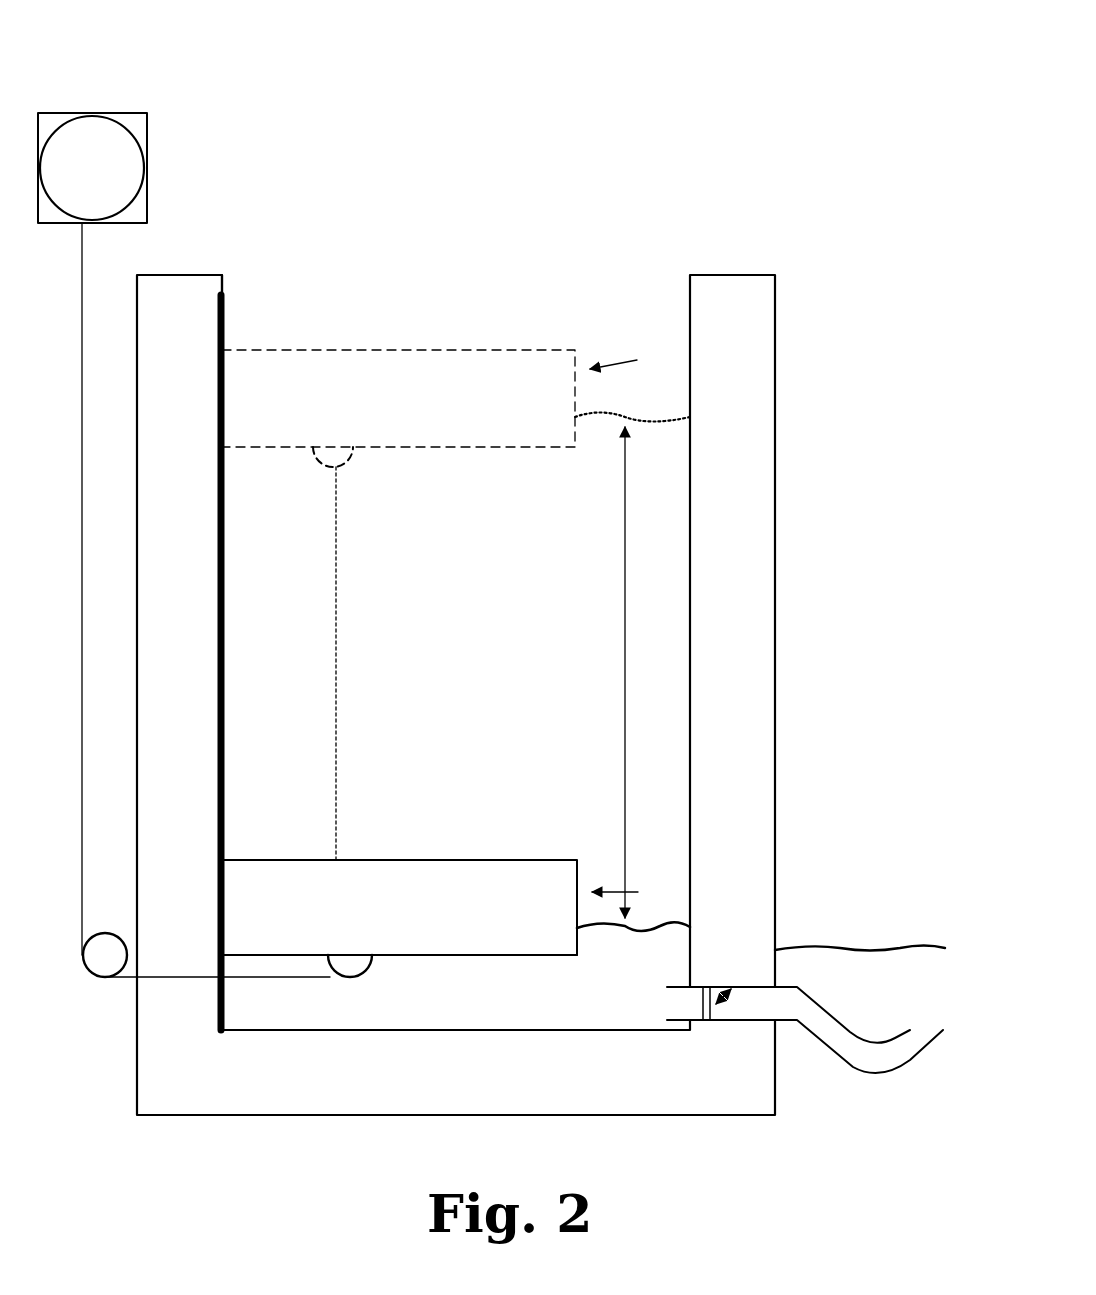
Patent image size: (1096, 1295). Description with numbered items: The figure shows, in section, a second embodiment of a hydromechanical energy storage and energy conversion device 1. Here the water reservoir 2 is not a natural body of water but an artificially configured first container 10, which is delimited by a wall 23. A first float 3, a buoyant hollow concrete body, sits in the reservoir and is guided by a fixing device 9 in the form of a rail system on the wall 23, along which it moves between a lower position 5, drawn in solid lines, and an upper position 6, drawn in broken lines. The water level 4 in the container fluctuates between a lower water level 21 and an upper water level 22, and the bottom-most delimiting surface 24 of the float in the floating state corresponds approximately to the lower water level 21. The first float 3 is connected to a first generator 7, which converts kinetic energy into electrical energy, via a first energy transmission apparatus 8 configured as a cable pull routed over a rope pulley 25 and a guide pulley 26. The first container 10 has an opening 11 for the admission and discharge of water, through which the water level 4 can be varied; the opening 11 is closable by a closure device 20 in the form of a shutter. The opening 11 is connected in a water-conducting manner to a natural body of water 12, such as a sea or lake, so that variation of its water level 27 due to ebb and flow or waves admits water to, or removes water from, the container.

The energy storage and energy conversion device 1 is at (152, 62).
The water reservoir 2 is at (530, 695).
The first container 10 is at (775, 458).
The first float 3 is at (540, 350).
The water level 4 is at (625, 637).
The lower position 5 is at (628, 889).
The upper position 6 is at (627, 359).
The first generator 7 is at (147, 168).
The first energy transmission apparatus 8 is at (82, 648).
The fixing device 9 is at (226, 548).
The opening 11 is at (668, 1003).
The natural body of water 12 is at (881, 999).
The closure device 20 is at (713, 985).
The lower water level 21 is at (593, 930).
The upper water level 22 is at (655, 425).
The wall 23 is at (222, 278).
The bottom-most delimiting surface 24 is at (490, 957).
The rope pulley 25 is at (340, 470).
The guide pulley 26 is at (93, 978).
The water level of the natural body of water 27 is at (817, 947).